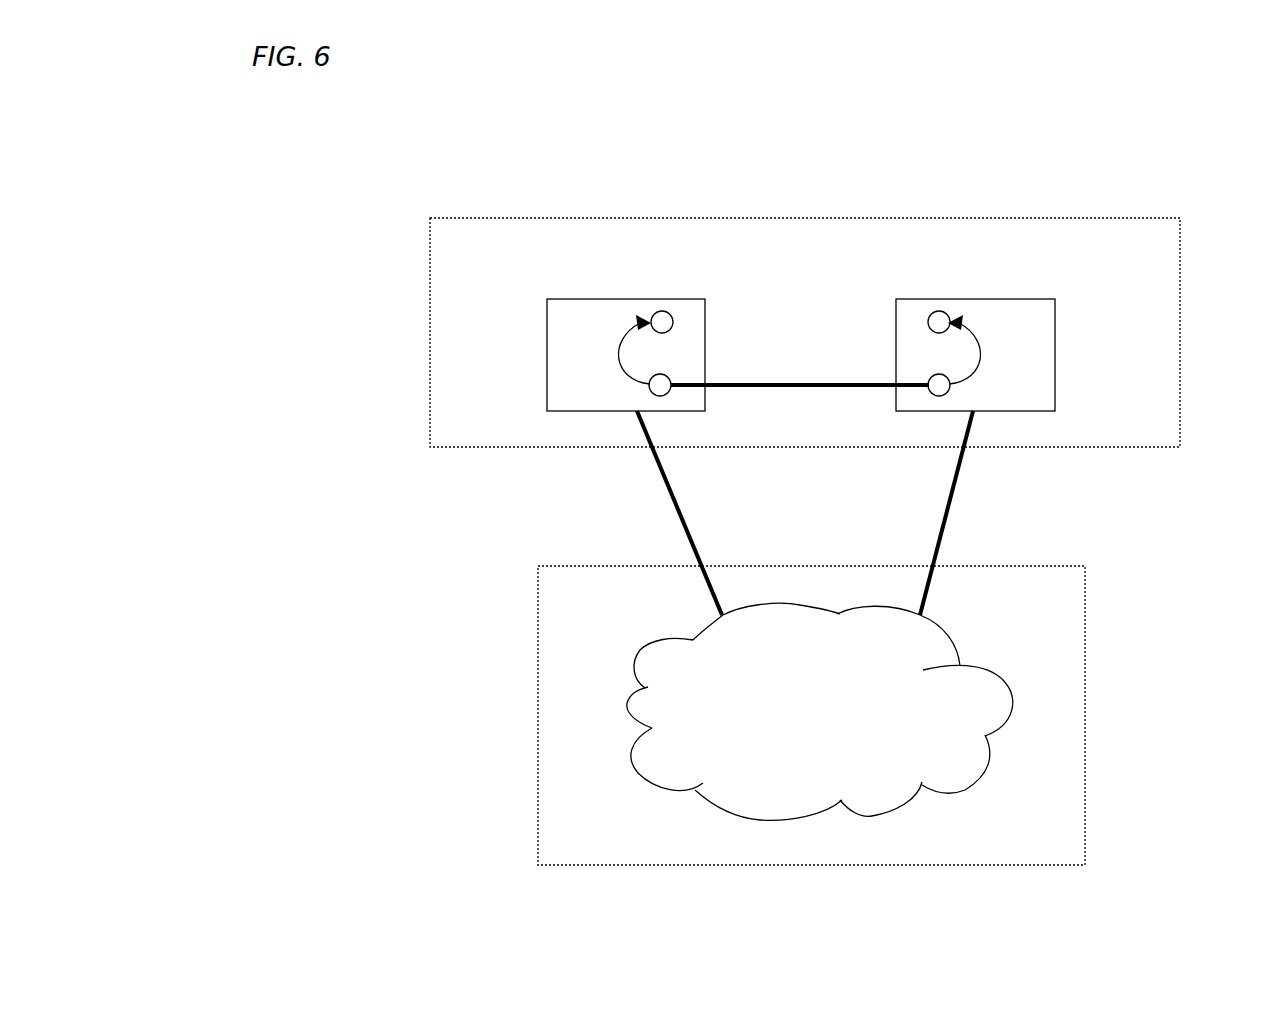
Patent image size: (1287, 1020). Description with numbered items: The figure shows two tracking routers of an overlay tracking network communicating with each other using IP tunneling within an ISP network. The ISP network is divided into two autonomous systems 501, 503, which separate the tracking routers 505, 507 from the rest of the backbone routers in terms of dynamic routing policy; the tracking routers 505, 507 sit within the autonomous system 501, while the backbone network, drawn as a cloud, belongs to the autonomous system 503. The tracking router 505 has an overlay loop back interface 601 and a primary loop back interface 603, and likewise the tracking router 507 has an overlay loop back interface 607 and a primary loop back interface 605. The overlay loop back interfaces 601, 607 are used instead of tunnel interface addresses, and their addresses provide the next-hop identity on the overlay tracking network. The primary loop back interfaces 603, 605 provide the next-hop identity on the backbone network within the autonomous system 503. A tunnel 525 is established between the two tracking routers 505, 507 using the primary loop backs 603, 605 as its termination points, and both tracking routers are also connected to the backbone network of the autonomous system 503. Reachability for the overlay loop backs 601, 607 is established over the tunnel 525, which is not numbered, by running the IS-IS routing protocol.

The autonomous system 501 is at (1180, 335).
The autonomous system 503 is at (1085, 713).
The tracking router 505 is at (547, 355).
The tracking router 507 is at (1055, 355).
The tunnel 525 is at (798, 383).
The overlay loop back interface 601 is at (670, 311).
The primary loop back interface 603 is at (671, 381).
The primary loop back interface 605 is at (931, 393).
The overlay loop back interface 607 is at (939, 311).